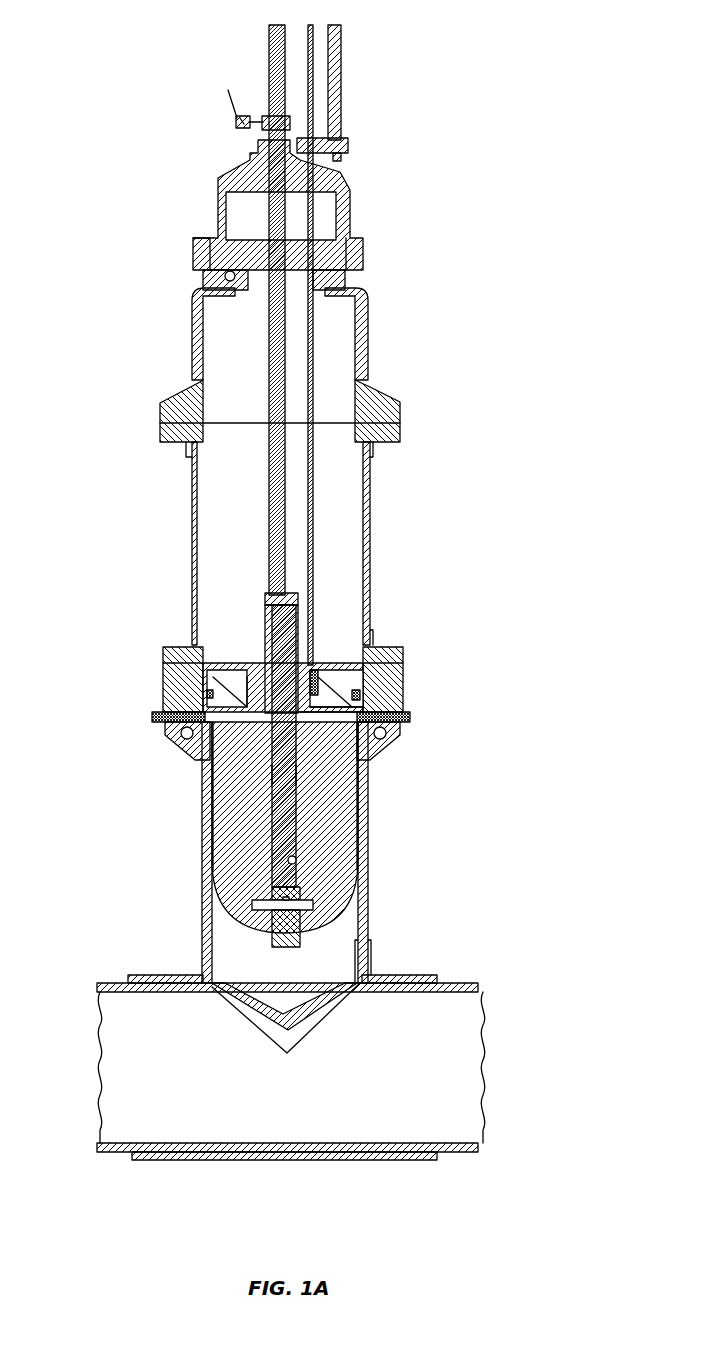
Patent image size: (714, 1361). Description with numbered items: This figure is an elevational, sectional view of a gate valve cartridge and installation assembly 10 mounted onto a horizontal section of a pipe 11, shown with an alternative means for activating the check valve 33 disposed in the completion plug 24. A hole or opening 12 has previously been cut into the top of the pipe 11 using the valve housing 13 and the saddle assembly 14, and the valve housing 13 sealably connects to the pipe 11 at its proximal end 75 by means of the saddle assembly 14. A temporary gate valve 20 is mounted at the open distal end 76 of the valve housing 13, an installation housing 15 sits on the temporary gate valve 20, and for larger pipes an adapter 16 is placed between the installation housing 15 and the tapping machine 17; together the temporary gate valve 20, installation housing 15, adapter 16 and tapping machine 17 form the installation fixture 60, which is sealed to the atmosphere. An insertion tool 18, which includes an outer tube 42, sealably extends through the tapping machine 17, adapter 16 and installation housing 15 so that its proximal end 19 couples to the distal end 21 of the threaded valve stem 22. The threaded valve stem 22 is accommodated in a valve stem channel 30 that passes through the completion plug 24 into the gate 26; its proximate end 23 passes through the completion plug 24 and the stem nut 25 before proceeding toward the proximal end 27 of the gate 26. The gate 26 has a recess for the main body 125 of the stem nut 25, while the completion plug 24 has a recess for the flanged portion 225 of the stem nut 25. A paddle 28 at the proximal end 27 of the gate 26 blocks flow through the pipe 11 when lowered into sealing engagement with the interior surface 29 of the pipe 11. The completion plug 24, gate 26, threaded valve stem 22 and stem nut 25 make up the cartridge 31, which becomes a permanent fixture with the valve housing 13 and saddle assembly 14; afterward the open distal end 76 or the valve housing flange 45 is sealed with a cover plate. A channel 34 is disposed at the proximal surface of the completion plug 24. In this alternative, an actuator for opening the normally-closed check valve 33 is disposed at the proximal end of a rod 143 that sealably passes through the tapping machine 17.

The gate valve cartridge and installation assembly 10 is at (456, 220).
The installation fixture 60 is at (90, 27).
The rod 143 is at (312, 84).
The tapping machine 17 is at (347, 212).
The adapter 16 is at (370, 330).
The insertion tool 18 is at (266, 348).
The outer tube 42 is at (300, 603).
The installation housing 15 is at (371, 500).
The distal end of the threaded valve stem 21 is at (289, 632).
The proximal end of the insertion tool 19 is at (264, 602).
The threaded valve stem 22 is at (260, 776).
The main body of the stem nut 125 is at (266, 773).
The temporary gate valve 20 is at (175, 685).
The distal end of the valve housing 76 is at (363, 700).
The completion plug 24 is at (216, 660).
The flanged portion of the stem nut 225 is at (248, 692).
The check valve 33 is at (330, 676).
The channel 34 is at (330, 703).
The valve housing flange 45 is at (402, 734).
The stem nut 25 is at (210, 722).
The valve housing 13 is at (380, 837).
The cartridge 31 is at (199, 821).
The gate 26 is at (366, 795).
The valve stem channel 30 is at (297, 866).
The proximate end of the threaded valve stem 23 is at (280, 887).
The proximal end of the gate 27 is at (330, 912).
The paddle 28 is at (272, 937).
The proximal end of the valve housing 75 is at (366, 962).
The pipe 11 is at (455, 977).
The hole or opening 12 is at (222, 990).
The interior surface of the pipe 29 is at (387, 1138).
The saddle assembly 14 is at (172, 1164).